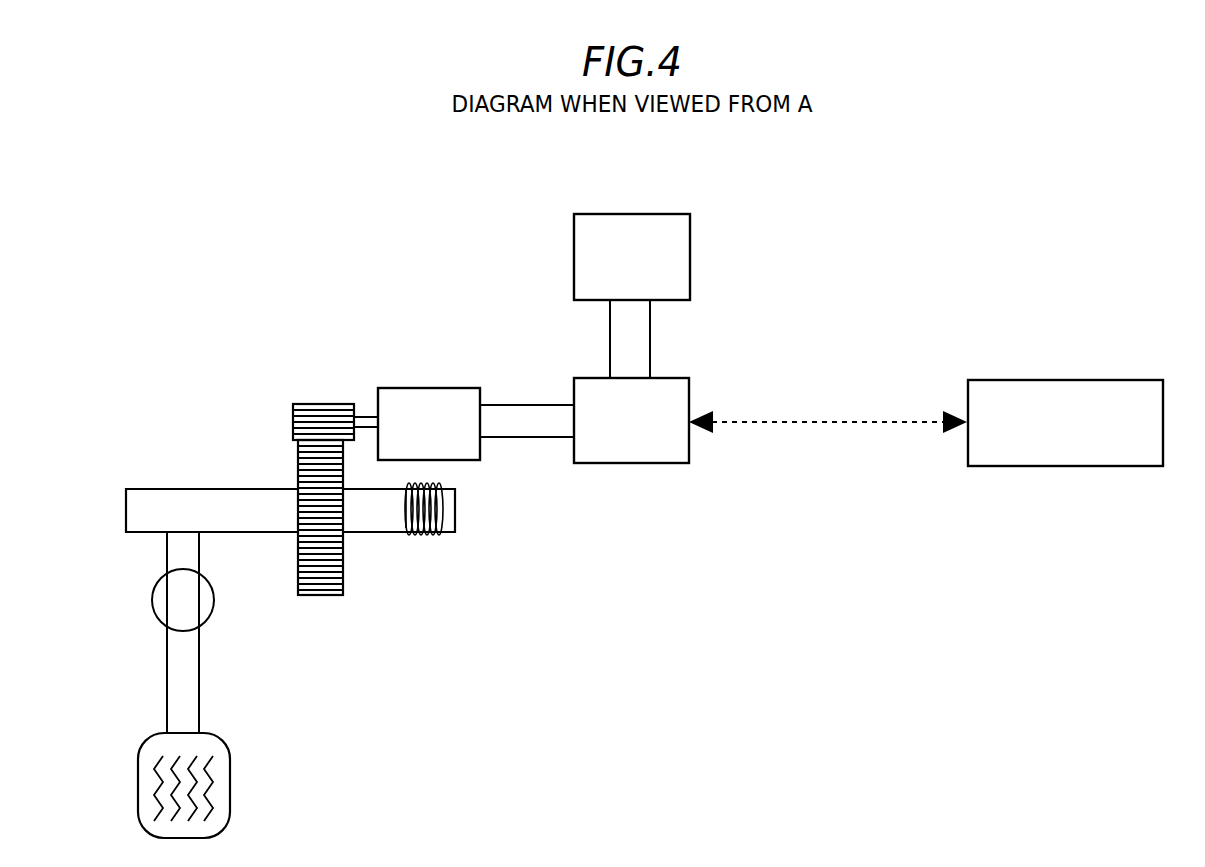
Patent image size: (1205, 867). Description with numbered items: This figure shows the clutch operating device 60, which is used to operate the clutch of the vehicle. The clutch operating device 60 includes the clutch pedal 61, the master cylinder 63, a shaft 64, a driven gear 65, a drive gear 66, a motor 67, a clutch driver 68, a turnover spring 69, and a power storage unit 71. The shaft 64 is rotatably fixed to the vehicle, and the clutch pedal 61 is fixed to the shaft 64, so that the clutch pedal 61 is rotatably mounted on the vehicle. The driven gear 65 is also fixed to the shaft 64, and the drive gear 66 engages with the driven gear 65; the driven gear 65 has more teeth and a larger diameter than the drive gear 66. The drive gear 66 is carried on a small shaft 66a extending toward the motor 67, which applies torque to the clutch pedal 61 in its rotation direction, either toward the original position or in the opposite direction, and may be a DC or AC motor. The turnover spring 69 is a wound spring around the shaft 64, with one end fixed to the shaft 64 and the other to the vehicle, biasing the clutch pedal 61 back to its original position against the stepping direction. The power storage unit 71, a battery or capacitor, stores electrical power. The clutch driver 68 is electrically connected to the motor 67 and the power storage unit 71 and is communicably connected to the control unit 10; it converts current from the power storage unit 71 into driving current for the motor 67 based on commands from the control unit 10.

The clutch operating device 60 is at (300, 233).
The clutch pedal 61 is at (138, 780).
The master cylinder 63 is at (152, 600).
The shaft 64 is at (232, 489).
The driven gear 65 is at (343, 574).
The drive gear 66 is at (318, 404).
The shaft of pinion gear 66a is at (363, 417).
The motor 67 is at (431, 377).
The clutch driver 68 is at (667, 378).
The turnover spring 69 is at (424, 537).
The power storage unit 71 is at (690, 258).
The control unit 10 is at (1067, 380).